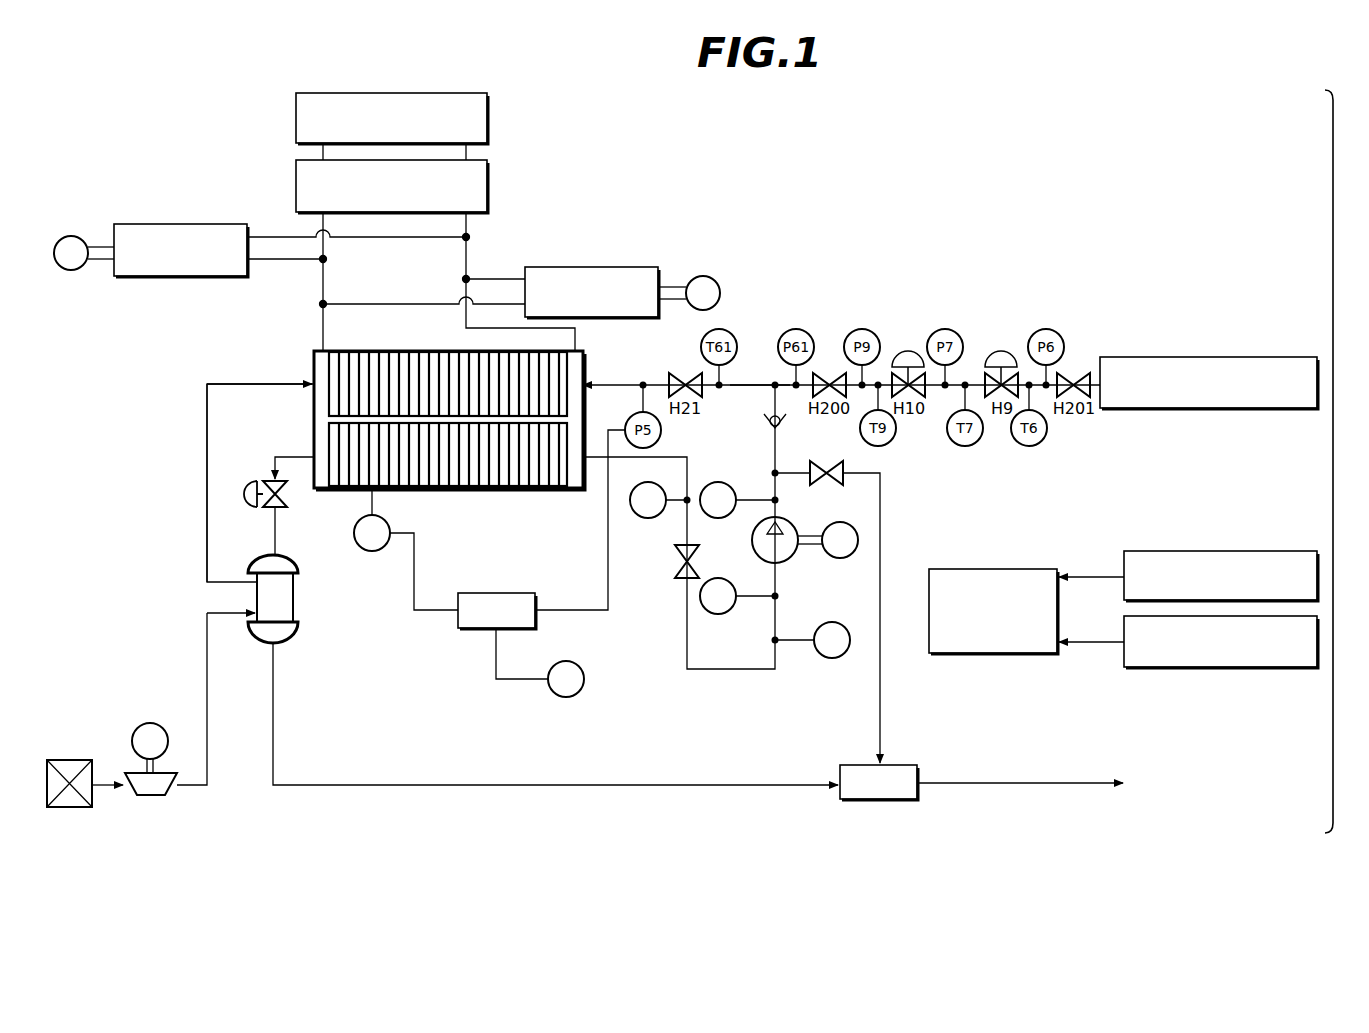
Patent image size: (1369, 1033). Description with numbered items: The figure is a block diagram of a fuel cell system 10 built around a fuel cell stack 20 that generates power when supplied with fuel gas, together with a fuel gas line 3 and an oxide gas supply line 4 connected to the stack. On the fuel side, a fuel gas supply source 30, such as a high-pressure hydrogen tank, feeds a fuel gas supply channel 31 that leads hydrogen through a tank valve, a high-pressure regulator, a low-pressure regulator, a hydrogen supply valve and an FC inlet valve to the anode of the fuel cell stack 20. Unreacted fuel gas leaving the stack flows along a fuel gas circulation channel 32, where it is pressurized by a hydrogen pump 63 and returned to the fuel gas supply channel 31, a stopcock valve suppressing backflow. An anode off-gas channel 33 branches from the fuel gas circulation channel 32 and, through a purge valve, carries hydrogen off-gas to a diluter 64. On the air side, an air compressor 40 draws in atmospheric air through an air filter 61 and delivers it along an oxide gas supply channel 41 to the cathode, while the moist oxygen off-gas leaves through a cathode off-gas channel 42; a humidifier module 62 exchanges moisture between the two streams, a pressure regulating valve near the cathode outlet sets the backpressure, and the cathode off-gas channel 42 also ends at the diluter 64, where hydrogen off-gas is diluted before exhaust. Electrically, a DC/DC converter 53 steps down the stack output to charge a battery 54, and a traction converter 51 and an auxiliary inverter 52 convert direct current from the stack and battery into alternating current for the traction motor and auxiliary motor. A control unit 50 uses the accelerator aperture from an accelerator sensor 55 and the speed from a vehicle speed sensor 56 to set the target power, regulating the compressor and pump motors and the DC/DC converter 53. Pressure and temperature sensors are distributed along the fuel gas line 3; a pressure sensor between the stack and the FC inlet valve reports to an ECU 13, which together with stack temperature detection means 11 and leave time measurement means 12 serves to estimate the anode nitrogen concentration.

The fuel gas line 3 is at (872, 246).
The oxide gas supply line 4 is at (103, 402).
The fuel cell system 10 is at (1366, 477).
The stack temperature detection means 11 is at (374, 552).
The leave time measurement means 12 is at (585, 683).
The ECU 13 is at (470, 630).
The fuel cell stack 20 is at (470, 489).
The fuel gas supply source 30 is at (1240, 357).
The fuel gas supply channel 31 is at (745, 383).
The fuel gas circulation channel 32 is at (687, 630).
The anode off-gas channel 33 is at (880, 520).
The air compressor 40 is at (168, 796).
The oxide gas supply channel 41 is at (258, 383).
The cathode off-gas channel 42 is at (288, 457).
The control unit 50 is at (1004, 569).
The traction converter 51 is at (592, 267).
The auxiliary inverter 52 is at (180, 224).
The DC/DC converter 53 is at (488, 191).
The battery 54 is at (488, 124).
The accelerator sensor 55 is at (1246, 551).
The vehicle speed sensor 56 is at (1232, 668).
The air filter 61 is at (75, 760).
The humidifier module 62 is at (298, 605).
The hydrogen pump 63 is at (788, 558).
The diluter 64 is at (900, 765).